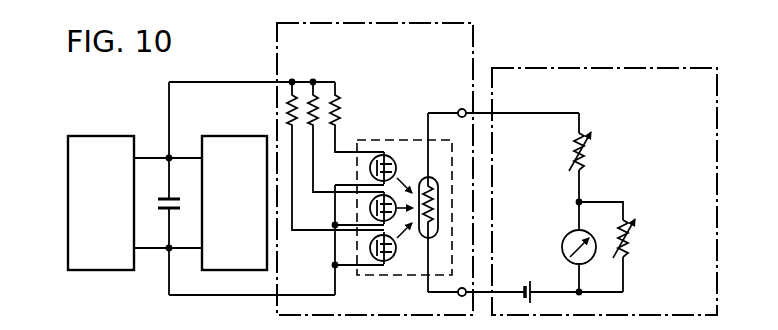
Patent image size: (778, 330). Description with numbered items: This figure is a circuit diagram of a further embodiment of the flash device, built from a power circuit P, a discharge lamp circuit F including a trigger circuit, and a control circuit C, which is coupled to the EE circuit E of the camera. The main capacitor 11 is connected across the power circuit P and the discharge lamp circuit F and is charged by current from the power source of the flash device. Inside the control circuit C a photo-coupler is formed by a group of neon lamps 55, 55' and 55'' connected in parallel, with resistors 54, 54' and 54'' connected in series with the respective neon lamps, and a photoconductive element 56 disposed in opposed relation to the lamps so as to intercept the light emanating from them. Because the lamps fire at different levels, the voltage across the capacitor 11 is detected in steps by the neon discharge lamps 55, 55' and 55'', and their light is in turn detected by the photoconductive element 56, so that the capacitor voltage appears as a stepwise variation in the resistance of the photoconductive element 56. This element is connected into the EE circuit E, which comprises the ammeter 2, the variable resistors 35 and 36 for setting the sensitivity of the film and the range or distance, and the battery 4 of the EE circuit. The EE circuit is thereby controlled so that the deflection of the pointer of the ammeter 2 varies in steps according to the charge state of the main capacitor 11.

The power circuit P is at (99, 136).
The discharge lamp circuit F is at (233, 136).
The control circuit C is at (476, 31).
The EE circuit E is at (588, 68).
The main capacitor 11 is at (172, 198).
The resistor 54 is at (333, 139).
The resistor 54' is at (346, 125).
The resistor 54'' is at (359, 117).
The neon lamp 55 is at (382, 149).
The neon lamp 55' is at (383, 208).
The neon lamp 55'' is at (397, 270).
The photoconductive element 56 is at (423, 182).
The variable resistor 36 is at (585, 156).
The variable resistor 35 is at (629, 241).
The ammeter 2 is at (562, 247).
The battery 4 is at (526, 287).